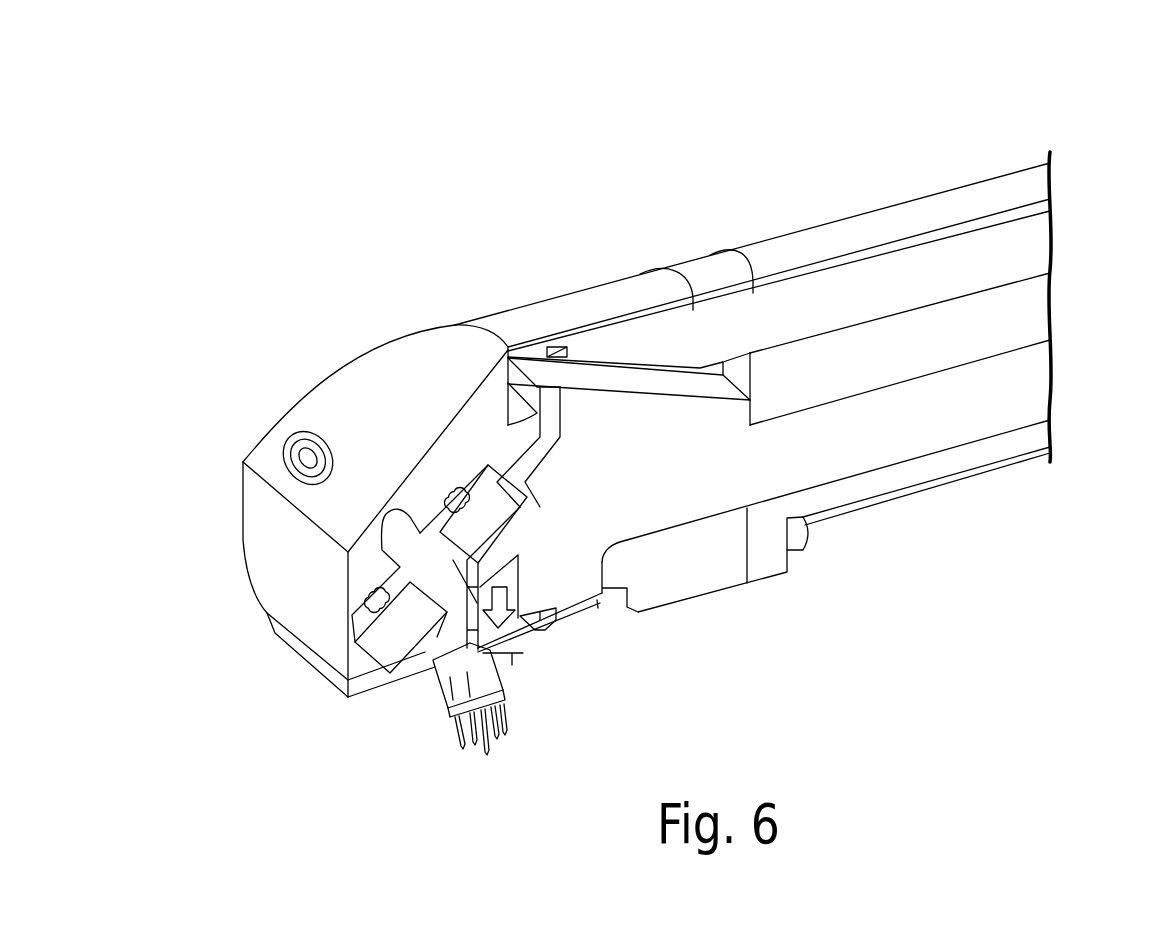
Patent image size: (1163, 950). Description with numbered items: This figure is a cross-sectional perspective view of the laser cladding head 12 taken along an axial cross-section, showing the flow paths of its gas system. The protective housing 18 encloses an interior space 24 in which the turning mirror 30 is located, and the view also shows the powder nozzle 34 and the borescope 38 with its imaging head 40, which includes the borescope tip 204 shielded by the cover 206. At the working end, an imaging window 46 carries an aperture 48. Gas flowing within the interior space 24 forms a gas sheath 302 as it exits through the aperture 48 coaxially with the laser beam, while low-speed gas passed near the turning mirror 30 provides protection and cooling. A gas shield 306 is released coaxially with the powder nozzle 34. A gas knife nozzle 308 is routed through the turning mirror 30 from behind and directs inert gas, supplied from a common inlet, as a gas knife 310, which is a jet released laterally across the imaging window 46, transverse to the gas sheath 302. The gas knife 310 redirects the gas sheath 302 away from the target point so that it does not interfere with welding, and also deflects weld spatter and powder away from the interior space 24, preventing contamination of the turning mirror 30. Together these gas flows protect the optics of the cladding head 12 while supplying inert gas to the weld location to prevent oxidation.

The laser cladding head 12 is at (806, 243).
The protective housing 18 is at (948, 207).
The interior space 24 is at (1003, 393).
The turning mirror 30 is at (497, 505).
The powder nozzle 34 is at (478, 742).
The borescope 38 is at (1003, 247).
The imaging head 40 is at (653, 335).
The imaging window 46 is at (597, 607).
The aperture 48 is at (512, 630).
The borescope tip 204 is at (620, 352).
The cover 206 is at (588, 380).
The gas sheath 302 is at (500, 593).
The gas shield 306 is at (445, 733).
The gas knife nozzle 308 is at (458, 640).
The gas knife 310 is at (512, 665).